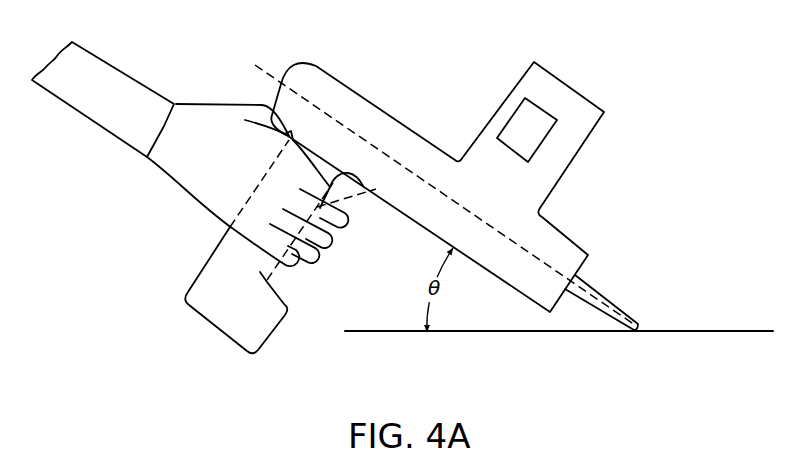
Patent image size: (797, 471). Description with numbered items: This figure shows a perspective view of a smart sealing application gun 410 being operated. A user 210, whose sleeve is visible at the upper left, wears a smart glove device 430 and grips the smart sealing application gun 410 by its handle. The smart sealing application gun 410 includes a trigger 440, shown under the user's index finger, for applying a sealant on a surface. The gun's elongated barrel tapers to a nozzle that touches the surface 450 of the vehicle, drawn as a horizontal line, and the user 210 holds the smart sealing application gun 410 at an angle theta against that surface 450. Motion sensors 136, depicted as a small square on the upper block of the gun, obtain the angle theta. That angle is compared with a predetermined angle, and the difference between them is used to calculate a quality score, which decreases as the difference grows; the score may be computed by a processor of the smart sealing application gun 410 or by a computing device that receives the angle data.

The motion sensors 136 is at (525, 98).
The user 210 is at (100, 62).
The smart sealing application gun 410 is at (363, 98).
The smart glove device 430 is at (195, 103).
The trigger 440 is at (352, 188).
The surface 450 is at (690, 331).